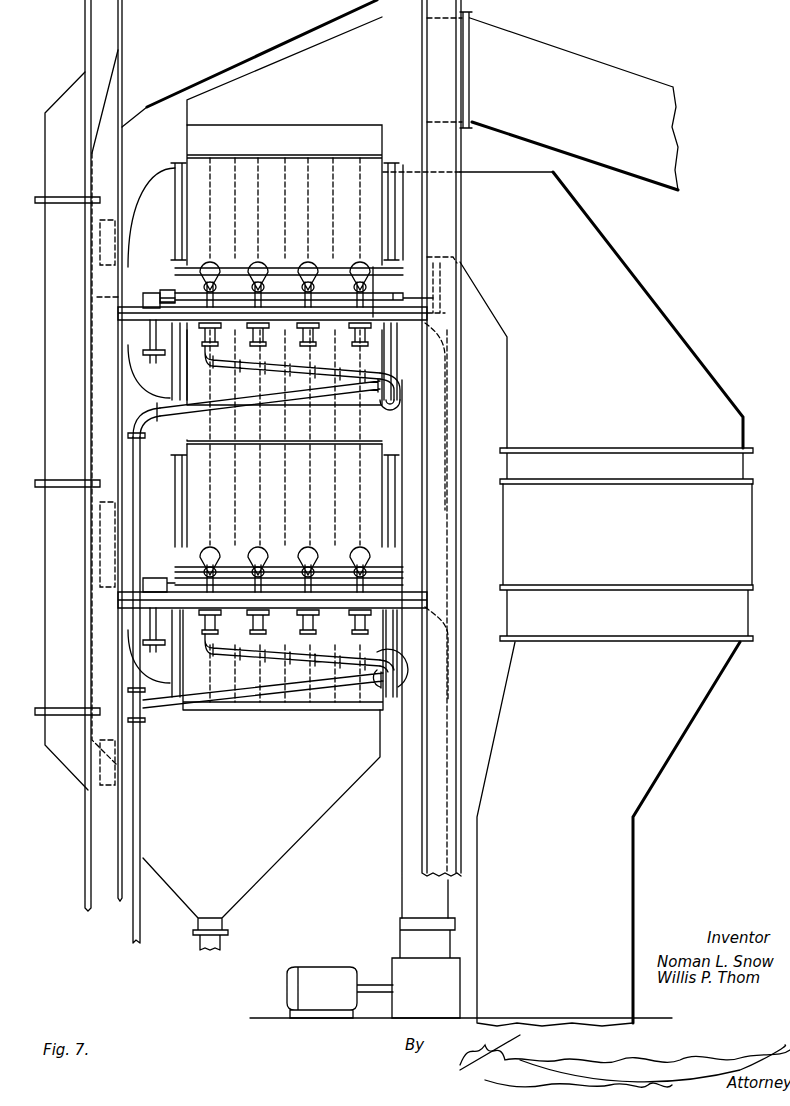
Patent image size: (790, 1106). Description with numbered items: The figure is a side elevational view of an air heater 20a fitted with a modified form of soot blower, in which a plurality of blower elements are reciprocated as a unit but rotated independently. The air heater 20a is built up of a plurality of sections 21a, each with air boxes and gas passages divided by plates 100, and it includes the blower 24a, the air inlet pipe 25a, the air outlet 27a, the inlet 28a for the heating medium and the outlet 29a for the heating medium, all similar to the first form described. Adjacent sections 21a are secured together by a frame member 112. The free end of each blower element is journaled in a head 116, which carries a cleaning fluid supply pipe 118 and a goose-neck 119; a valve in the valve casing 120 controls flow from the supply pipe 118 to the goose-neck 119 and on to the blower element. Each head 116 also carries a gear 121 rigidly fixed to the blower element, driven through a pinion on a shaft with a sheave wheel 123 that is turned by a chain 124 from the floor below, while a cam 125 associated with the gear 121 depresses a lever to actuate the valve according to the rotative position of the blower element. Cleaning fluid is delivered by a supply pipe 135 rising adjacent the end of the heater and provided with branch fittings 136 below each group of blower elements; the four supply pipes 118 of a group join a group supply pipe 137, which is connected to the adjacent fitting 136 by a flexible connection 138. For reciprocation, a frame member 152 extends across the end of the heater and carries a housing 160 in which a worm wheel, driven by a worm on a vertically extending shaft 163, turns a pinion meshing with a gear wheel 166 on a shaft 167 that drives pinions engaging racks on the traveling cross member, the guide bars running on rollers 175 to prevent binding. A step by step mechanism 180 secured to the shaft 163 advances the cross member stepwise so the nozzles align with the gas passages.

The air heater 20a is at (388, 437).
The section 21a is at (388, 525).
The blower 24a is at (320, 977).
The air inlet pipe 25a is at (410, 812).
The air outlet 27a is at (582, 232).
The inlet for the heating medium 28a is at (513, 47).
The outlet for the heating medium 29a is at (250, 858).
The plate 100 is at (458, 490).
The frame member 112 is at (167, 267).
The head 116 is at (215, 262).
The cleaning fluid supply pipe 118 is at (227, 352).
The goose-neck 119 is at (307, 300).
The valve casing 120 is at (240, 612).
The gear 121 is at (300, 565).
The sheave wheel 123 is at (264, 545).
The chain 124 is at (360, 570).
The cam 125 is at (355, 300).
The cleaning fluid supply pipe 135 is at (148, 837).
The branch fitting 136 is at (157, 420).
The group supply pipe 137 is at (243, 365).
The flexible connection 138 is at (270, 400).
The frame member 152 is at (123, 317).
The housing 160 is at (150, 302).
The shaft 163 is at (147, 345).
The gear wheel 166 is at (160, 283).
The shaft 167 is at (315, 262).
The roller 175 is at (342, 273).
The step by step mechanism 180 is at (147, 360).